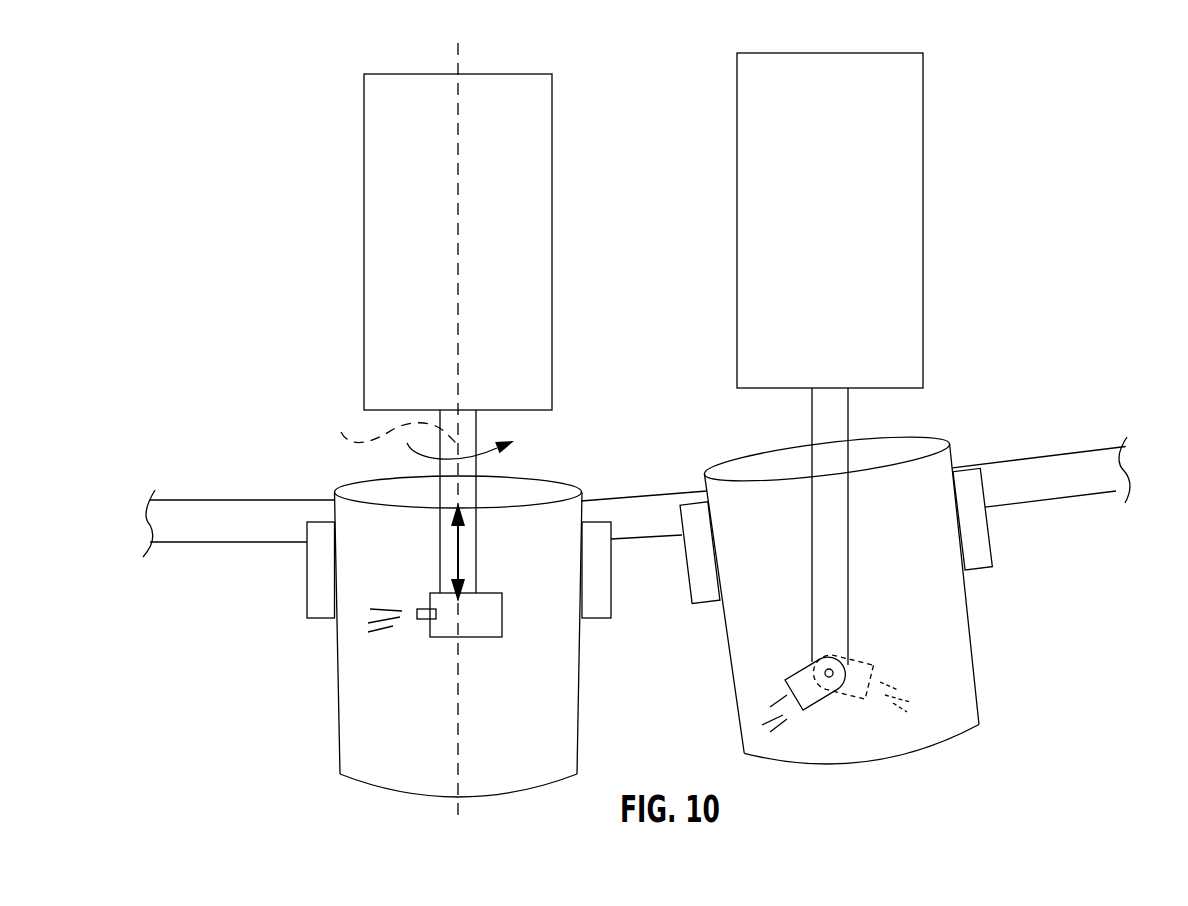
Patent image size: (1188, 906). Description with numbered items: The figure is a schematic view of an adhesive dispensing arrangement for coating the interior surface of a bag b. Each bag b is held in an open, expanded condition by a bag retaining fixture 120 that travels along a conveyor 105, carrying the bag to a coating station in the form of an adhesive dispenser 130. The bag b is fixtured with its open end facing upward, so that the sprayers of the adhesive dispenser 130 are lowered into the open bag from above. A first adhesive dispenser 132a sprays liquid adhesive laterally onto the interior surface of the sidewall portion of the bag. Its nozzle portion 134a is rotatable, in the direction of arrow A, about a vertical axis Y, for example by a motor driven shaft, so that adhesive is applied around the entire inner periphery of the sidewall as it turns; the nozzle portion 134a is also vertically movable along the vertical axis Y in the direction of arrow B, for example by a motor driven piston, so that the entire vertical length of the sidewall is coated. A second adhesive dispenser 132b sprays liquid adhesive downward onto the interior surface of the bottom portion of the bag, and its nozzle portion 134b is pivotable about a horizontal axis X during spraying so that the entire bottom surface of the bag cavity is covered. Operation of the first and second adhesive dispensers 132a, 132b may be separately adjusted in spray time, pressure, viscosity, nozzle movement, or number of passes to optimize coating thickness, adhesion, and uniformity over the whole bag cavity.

The conveyor 105 is at (1093, 480).
The bag retaining fixture 120 is at (266, 591).
The adhesive dispenser 130 is at (1018, 87).
The first adhesive dispenser 132a is at (314, 163).
The second adhesive dispenser 132b is at (694, 162).
The nozzle portion 134a is at (430, 633).
The nozzle portion 134b is at (803, 677).
The direction of rotation A is at (469, 445).
The direction of vertical movement B is at (458, 550).
The horizontal axis X is at (832, 668).
The vertical axis Y is at (392, 427).
The bag b is at (560, 668).